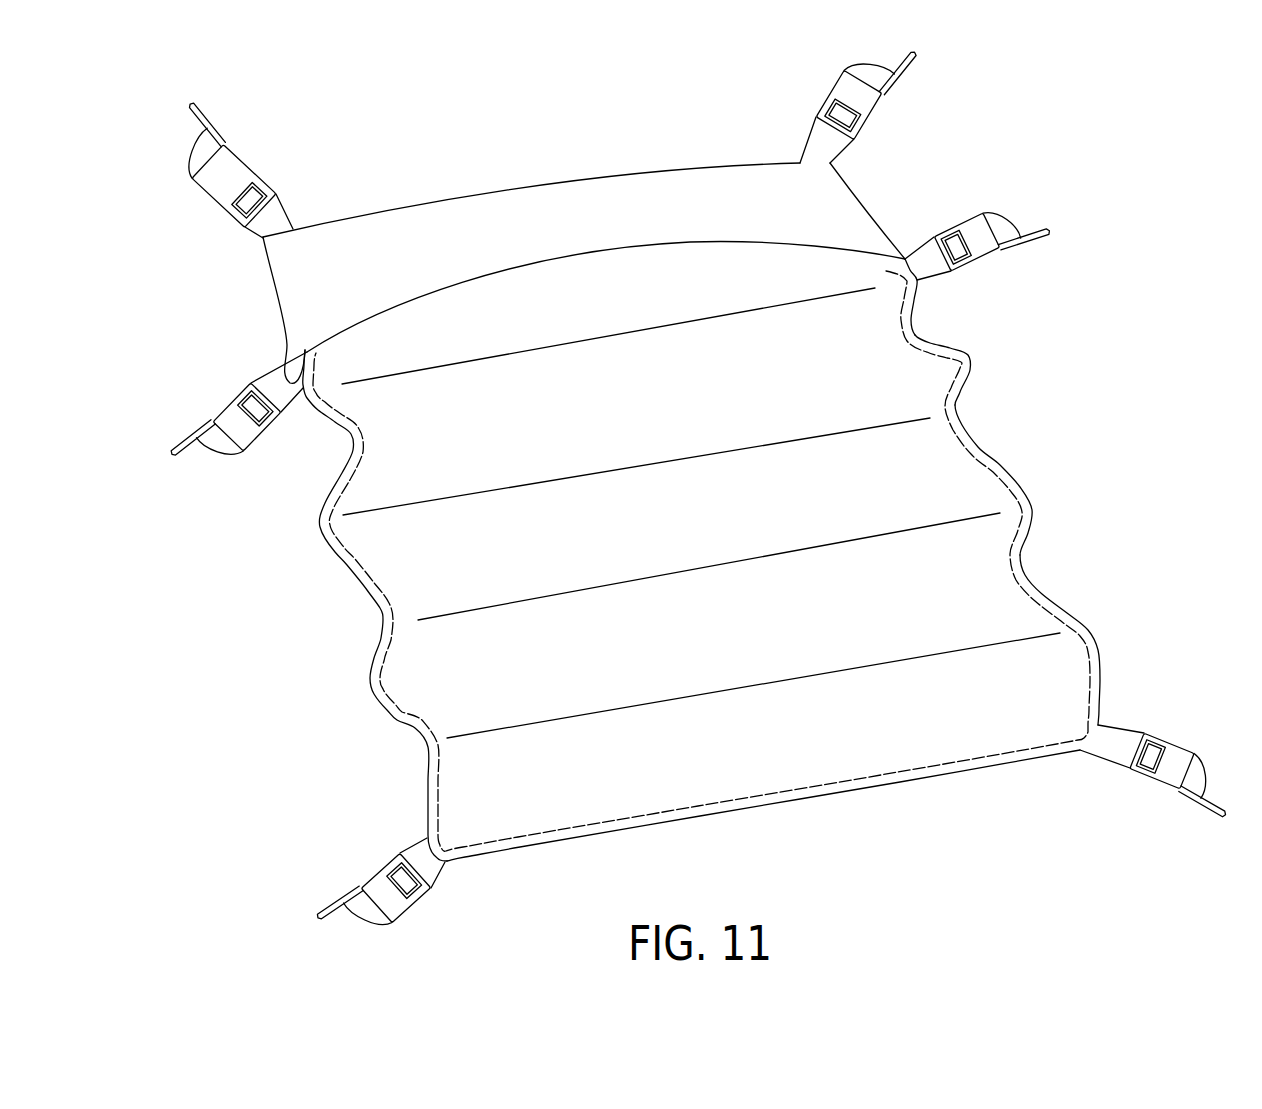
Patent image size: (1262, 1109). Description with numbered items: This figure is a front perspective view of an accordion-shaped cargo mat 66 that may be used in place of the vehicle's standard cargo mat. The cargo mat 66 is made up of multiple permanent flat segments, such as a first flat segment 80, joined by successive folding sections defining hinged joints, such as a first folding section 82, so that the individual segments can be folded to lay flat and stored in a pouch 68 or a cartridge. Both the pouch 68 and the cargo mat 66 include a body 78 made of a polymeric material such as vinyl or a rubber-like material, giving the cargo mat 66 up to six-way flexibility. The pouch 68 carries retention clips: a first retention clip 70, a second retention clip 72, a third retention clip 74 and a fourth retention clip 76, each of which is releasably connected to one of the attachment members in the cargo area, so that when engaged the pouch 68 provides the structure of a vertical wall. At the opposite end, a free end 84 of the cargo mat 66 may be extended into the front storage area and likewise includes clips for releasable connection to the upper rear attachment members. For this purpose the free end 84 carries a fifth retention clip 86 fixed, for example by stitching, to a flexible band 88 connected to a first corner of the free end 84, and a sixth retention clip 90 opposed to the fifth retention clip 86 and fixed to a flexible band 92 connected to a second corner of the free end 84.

The cargo mat 66 is at (562, 153).
The pouch 68 is at (838, 213).
The first retention clip 70 is at (232, 422).
The second retention clip 72 is at (222, 188).
The third retention clip 74 is at (983, 243).
The fourth retention clip 76 is at (873, 98).
The body 78 is at (940, 370).
The first flat segment 80 is at (957, 463).
The first folding section 82 is at (993, 580).
The free end 84 is at (817, 773).
The fifth retention clip 86 is at (378, 892).
The flexible band 88 is at (420, 853).
The sixth retention clip 90 is at (1177, 757).
The flexible band 92 is at (1112, 745).